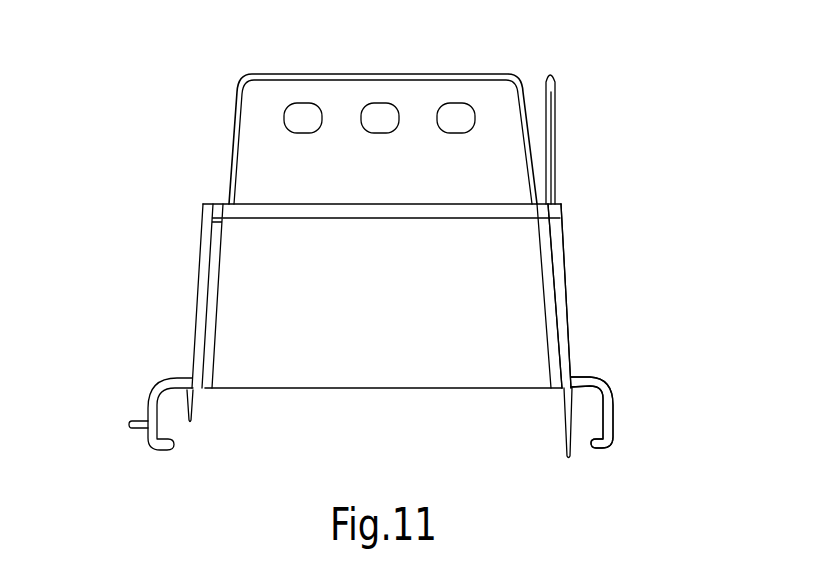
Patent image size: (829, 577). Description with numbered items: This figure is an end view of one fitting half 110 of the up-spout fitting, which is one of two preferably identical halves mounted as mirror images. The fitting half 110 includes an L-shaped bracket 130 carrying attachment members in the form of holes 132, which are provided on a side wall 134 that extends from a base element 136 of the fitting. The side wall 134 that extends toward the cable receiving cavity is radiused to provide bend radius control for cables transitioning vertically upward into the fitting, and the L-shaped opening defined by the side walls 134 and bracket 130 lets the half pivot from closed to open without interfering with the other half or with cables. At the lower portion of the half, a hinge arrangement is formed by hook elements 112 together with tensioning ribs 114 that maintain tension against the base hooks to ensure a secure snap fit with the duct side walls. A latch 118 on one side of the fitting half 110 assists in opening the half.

The fitting half 110 is at (609, 231).
The hook element 112 is at (173, 450).
The tensioning rib 114 is at (192, 423).
The latch 118 is at (130, 423).
The L-shaped bracket 130 is at (467, 76).
The hole 132 is at (393, 107).
The side wall 134 is at (563, 315).
The base element 136 is at (572, 377).